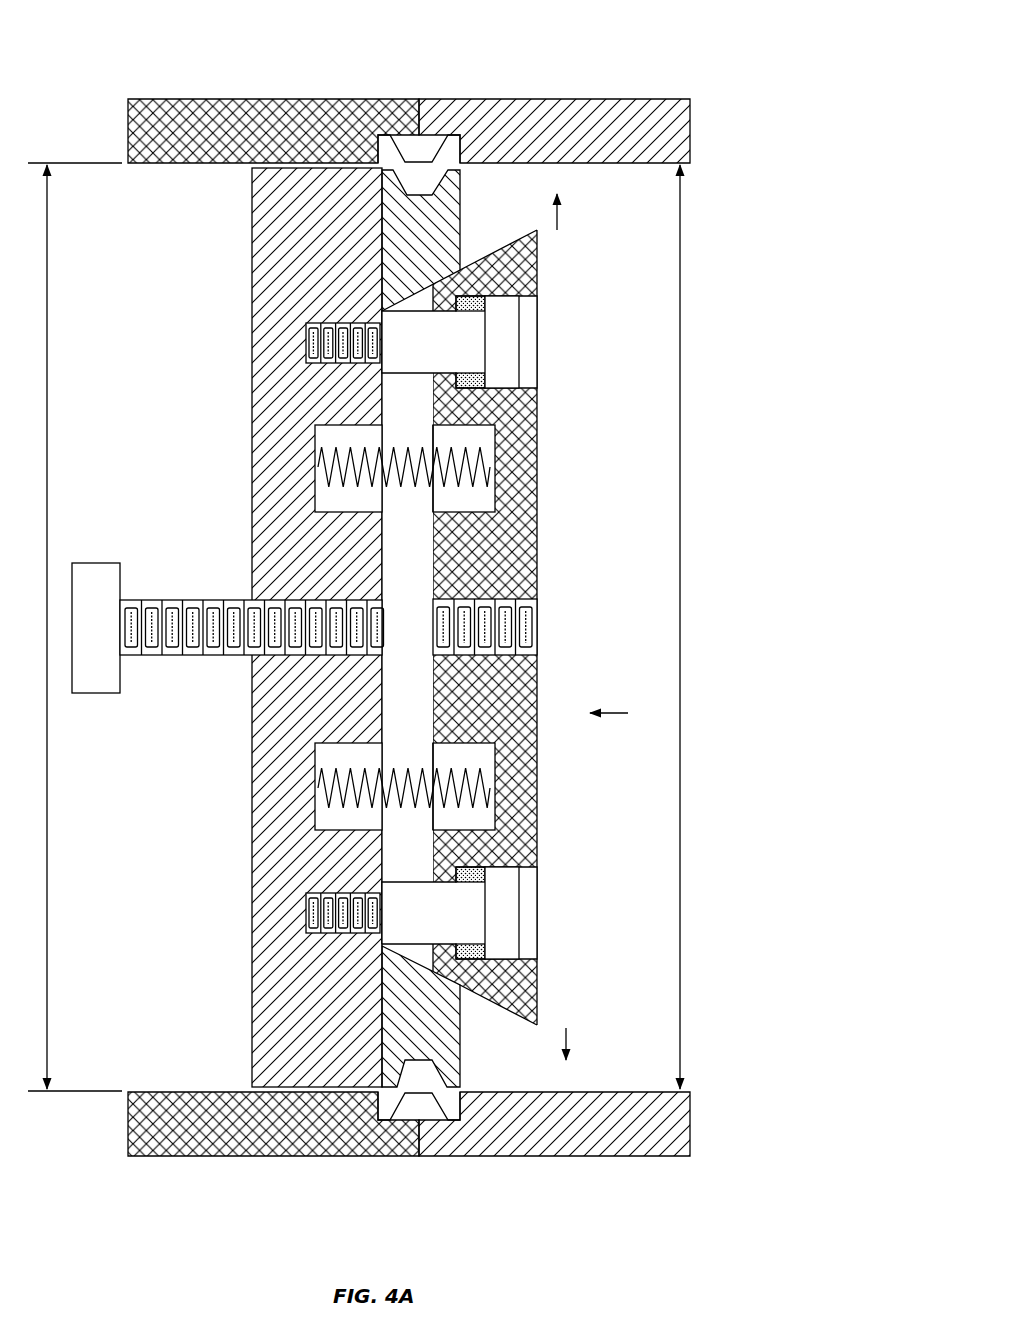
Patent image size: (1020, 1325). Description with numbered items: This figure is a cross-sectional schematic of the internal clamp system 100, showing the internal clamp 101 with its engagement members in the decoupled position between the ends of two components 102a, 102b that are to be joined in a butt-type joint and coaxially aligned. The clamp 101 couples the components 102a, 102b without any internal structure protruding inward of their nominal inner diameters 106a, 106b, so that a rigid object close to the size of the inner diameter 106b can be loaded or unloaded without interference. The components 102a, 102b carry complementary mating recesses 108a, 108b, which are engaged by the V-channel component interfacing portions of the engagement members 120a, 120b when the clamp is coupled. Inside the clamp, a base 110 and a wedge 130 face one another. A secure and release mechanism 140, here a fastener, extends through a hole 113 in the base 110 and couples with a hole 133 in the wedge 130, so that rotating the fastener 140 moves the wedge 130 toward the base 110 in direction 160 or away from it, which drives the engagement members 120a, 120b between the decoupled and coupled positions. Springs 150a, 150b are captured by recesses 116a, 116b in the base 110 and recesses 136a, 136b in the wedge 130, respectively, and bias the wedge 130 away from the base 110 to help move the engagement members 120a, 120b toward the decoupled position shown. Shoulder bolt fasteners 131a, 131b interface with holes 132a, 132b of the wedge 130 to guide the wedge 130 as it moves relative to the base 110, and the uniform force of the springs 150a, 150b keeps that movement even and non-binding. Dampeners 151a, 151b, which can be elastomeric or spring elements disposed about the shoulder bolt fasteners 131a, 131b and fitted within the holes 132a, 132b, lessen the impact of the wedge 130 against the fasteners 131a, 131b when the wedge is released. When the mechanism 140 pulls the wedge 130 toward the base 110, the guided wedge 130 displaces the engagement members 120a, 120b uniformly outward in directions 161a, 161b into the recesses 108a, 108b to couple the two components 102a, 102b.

The internal clamp system 100 is at (112, 42).
The internal clamp 101 is at (176, 290).
The first component 102a is at (198, 98).
The second component 102b is at (603, 98).
The inner diameter of first component 106a is at (47, 852).
The inner diameter of second component 106b is at (680, 645).
The mating recess of first component 108a is at (378, 145).
The mating recess of second component 108b is at (462, 140).
The base 110 is at (252, 524).
The hole in base 113 is at (382, 600).
The first recess in base 116a is at (366, 434).
The second recess in base 116b is at (370, 820).
The first engagement member 120a is at (462, 208).
The second engagement member 120b is at (462, 1052).
The wedge 130 is at (537, 560).
The first shoulder bolt fastener 131a is at (520, 336).
The second shoulder bolt fastener 131b is at (520, 917).
The first hole in wedge 132a is at (540, 312).
The second hole in wedge 132b is at (538, 950).
The hole in wedge 133 is at (537, 599).
The first recess in wedge 136a is at (436, 497).
The second recess in wedge 136b is at (445, 761).
The secure and release mechanism 140 is at (178, 656).
The first spring 150a is at (495, 448).
The second spring 150b is at (495, 798).
The first dampener 151a is at (487, 375).
The second dampener 151b is at (487, 872).
The direction of wedge movement 160 is at (612, 716).
The first outward direction 161a is at (560, 211).
The second outward direction 161b is at (570, 1040).